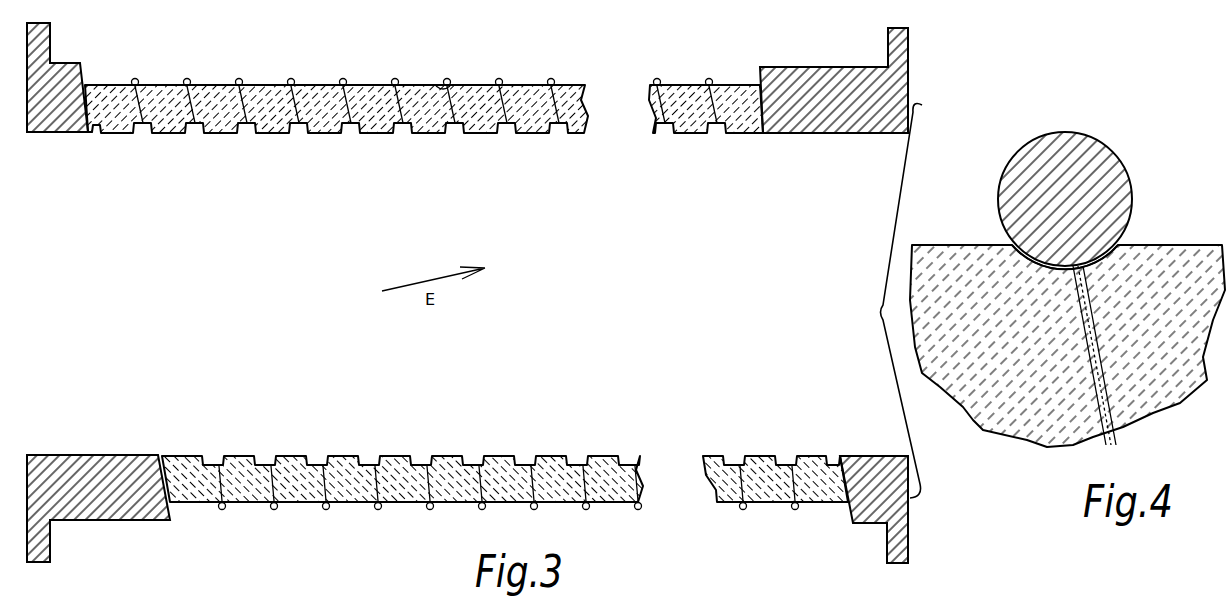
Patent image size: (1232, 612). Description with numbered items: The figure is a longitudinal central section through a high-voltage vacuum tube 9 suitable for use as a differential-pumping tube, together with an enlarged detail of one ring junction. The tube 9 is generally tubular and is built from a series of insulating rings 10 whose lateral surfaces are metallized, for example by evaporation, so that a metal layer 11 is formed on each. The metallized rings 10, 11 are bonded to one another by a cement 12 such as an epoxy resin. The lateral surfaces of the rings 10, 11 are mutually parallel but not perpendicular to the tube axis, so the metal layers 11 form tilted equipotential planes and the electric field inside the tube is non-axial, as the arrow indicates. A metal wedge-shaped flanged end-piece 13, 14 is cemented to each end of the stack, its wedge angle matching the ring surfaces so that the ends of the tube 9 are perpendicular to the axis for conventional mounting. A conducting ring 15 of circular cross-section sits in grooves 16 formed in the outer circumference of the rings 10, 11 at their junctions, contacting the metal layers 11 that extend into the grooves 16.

In FIG. 3, the vacuum tube 9 is at (264, 80).
In FIG. 3, the insulating ring 10 is at (155, 90).
In FIG. 4, the insulating ring 10 is at (960, 253).
In FIG. 3, the metal layer 11 is at (191, 98).
In FIG. 4, the metal layer 11 is at (1101, 432).
In FIG. 4, the cement 12 is at (1112, 442).
In FIG. 3, the wedge-shaped flanged end-piece 13 is at (120, 521).
In FIG. 3, the wedge-shaped flanged end-piece 14 is at (875, 522).
In FIG. 3, the conducting ring 15 is at (451, 81).
In FIG. 4, the conducting ring 15 is at (1120, 168).
In FIG. 3, the groove 16 is at (431, 90).
In FIG. 4, the groove 16 is at (1125, 251).